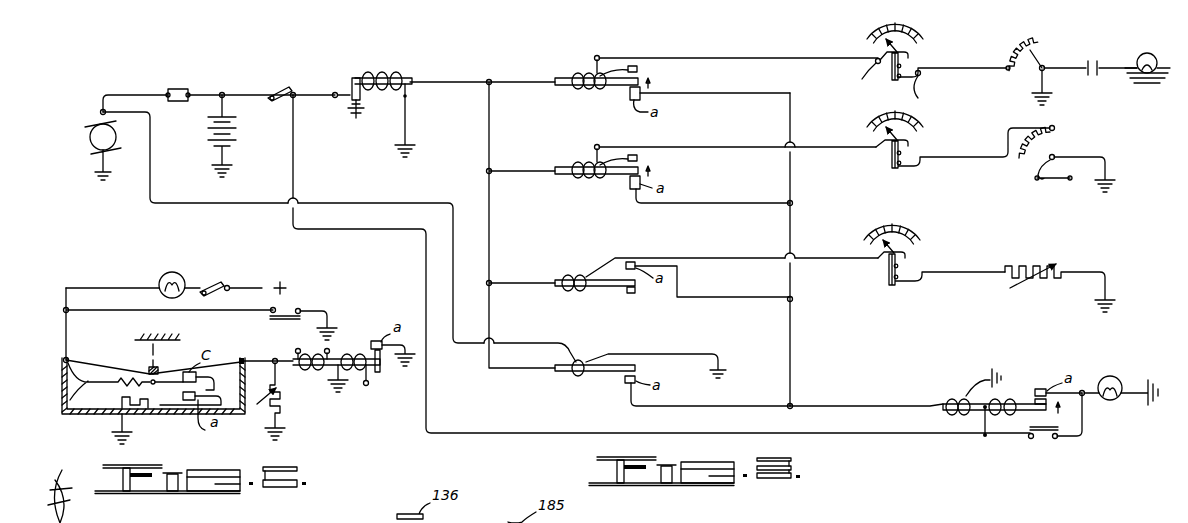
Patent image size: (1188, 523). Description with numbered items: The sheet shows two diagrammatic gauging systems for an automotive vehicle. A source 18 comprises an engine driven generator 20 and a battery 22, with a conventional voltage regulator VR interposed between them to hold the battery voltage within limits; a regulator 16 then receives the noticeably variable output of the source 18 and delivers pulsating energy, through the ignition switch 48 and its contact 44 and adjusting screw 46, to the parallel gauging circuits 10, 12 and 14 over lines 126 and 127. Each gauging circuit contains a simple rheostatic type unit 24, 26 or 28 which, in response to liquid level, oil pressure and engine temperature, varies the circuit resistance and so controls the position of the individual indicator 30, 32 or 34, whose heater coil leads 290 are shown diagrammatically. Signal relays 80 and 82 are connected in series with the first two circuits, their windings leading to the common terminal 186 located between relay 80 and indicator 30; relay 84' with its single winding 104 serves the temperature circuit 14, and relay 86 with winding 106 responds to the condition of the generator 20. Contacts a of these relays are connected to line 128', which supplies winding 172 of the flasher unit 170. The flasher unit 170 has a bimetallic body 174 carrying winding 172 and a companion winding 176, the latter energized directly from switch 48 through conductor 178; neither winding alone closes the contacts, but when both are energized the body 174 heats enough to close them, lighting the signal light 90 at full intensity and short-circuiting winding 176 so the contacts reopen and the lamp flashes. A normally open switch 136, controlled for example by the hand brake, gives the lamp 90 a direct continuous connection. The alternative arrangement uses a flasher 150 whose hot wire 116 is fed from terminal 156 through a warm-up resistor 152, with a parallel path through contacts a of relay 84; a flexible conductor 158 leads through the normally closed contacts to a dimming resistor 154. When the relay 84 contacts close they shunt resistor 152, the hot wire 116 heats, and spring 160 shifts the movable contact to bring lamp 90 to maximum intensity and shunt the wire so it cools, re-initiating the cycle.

In FIG. 3, the gauging circuit 10 is at (830, 79).
In FIG. 3, the gauging circuit 12 is at (837, 180).
In FIG. 3, the gauging circuit 14 is at (833, 293).
In FIG. 3, the regulator 16 is at (402, 73).
In FIG. 3, the source 18 is at (187, 164).
In FIG. 3, the generator 20 is at (92, 142).
In FIG. 3, the battery 22 is at (236, 134).
In FIG. 3, the rheostatic type unit 24 is at (1048, 53).
In FIG. 3, the rheostatic type unit 26 is at (1058, 144).
In FIG. 3, the rheostatic type unit 28 is at (1019, 262).
In FIG. 3, the indicator 30 is at (906, 63).
In FIG. 3, the indicator 32 is at (906, 149).
In FIG. 3, the indicator 34 is at (903, 264).
In FIG. 3, the switch contact 44 is at (349, 93).
In FIG. 3, the adjusting screw 46 is at (350, 105).
In FIG. 3, the ignition switch 48 is at (283, 92).
In FIG. 2, the ignition switch 48 is at (220, 285).
In FIG. 3, the signal relay 80 is at (578, 70).
In FIG. 3, the signal relay 82 is at (578, 159).
In FIG. 2, the signal relay 84 is at (354, 377).
In FIG. 3, the relay 84' is at (716, 265).
In FIG. 3, the signal relay 86 is at (591, 359).
In FIG. 3, the signal light 90 is at (1119, 384).
In FIG. 2, the signal light 90 is at (181, 276).
In FIG. 3, the heater winding 104 is at (575, 291).
In FIG. 3, the heater winding 106 is at (578, 376).
In FIG. 2, the hot wire 116 is at (116, 372).
In FIG. 3, the conductor 126 is at (489, 84).
In FIG. 3, the conductor 127 is at (491, 140).
In FIG. 3, the line 128' is at (840, 370).
In FIG. 3, the normally open switch 136 is at (1045, 440).
In FIG. 2, the normally open switch 136 is at (290, 313).
In FIG. 2, the flasher 150 is at (188, 424).
In FIG. 2, the warm-up resistor 152 is at (281, 407).
In FIG. 2, the dimming resistor 154 is at (130, 396).
In FIG. 2, the terminal 156 is at (70, 360).
In FIG. 2, the flexible conductor 158 is at (62, 400).
In FIG. 2, the spring 160 is at (160, 360).
In FIG. 3, the flasher unit 170 is at (988, 418).
In FIG. 3, the winding 172 is at (950, 398).
In FIG. 3, the bimetallic body 174 is at (1013, 416).
In FIG. 3, the companion winding 176 is at (1026, 396).
In FIG. 3, the conductor 178 is at (865, 437).
In FIG. 3, the common terminal 186 is at (600, 57).
In FIG. 3, the leads 290 is at (898, 86).
In FIG. 3, the voltage regulator VR is at (180, 88).